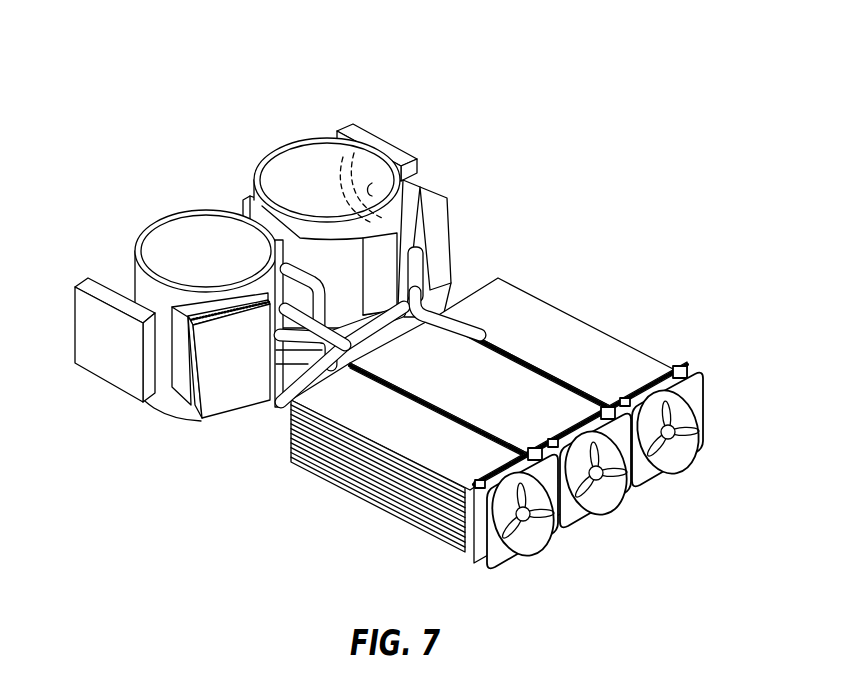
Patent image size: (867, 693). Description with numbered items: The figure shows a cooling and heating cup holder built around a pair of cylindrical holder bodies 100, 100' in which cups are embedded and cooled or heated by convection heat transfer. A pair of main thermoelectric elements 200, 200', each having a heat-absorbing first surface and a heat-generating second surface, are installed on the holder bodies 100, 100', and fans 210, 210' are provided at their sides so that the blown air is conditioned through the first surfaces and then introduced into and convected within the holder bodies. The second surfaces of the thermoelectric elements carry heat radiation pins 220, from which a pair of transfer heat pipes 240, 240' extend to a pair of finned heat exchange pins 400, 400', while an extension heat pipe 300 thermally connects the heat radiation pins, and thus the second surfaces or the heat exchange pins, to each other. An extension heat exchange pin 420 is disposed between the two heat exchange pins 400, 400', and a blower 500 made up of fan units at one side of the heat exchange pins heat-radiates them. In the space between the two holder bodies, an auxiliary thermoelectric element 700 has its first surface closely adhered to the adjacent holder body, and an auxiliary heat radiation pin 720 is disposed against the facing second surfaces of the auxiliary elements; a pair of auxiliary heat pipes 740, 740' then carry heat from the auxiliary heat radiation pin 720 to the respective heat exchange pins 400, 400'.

The holder body 100 is at (321, 212).
The holder body 100' is at (162, 307).
The thermoelectric element 200 is at (368, 218).
The thermoelectric element 200' is at (208, 358).
The fan 210 is at (389, 125).
The fan 210' is at (92, 362).
The heat radiation pin 220 is at (446, 193).
The transfer heat pipe 240 is at (466, 246).
The transfer heat pipe 240' is at (277, 434).
The extension heat pipe 300 is at (440, 290).
The heat exchange pin 400 is at (565, 332).
The heat exchange pin 400' is at (409, 475).
The extension heat exchange pin 420 is at (487, 377).
The blower 500 is at (643, 477).
The auxiliary thermoelectric element 700 is at (253, 193).
The auxiliary heat radiation pin 720 is at (180, 213).
The auxiliary heat pipe 740 is at (352, 179).
The auxiliary heat pipe 740' is at (207, 406).